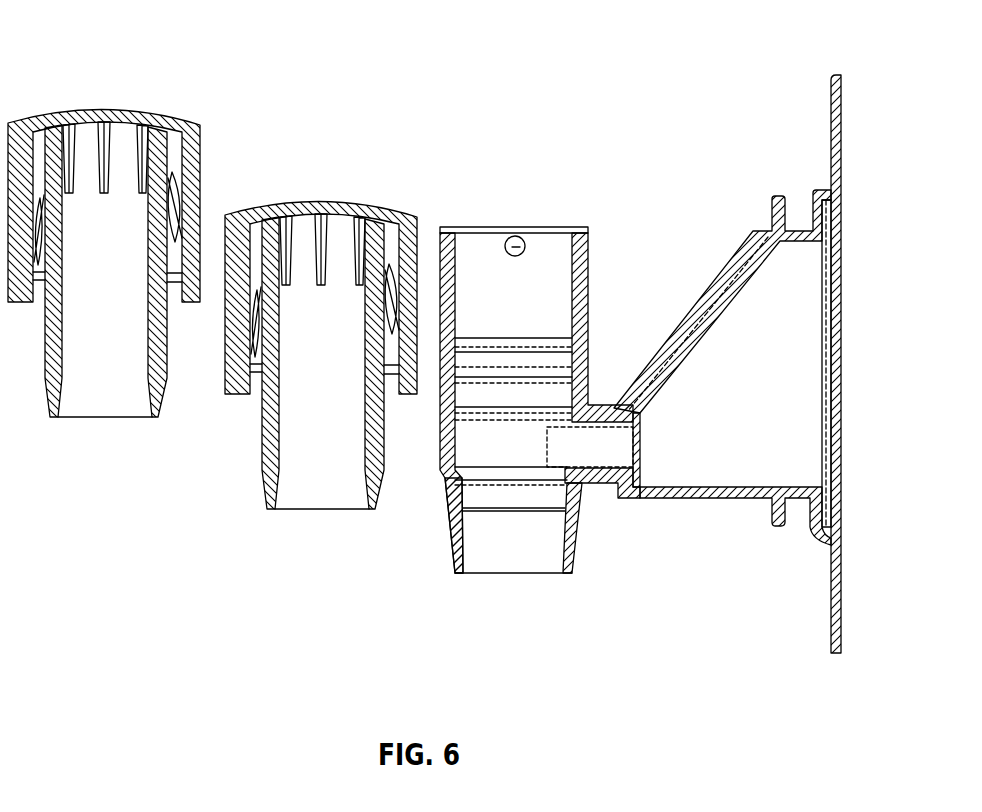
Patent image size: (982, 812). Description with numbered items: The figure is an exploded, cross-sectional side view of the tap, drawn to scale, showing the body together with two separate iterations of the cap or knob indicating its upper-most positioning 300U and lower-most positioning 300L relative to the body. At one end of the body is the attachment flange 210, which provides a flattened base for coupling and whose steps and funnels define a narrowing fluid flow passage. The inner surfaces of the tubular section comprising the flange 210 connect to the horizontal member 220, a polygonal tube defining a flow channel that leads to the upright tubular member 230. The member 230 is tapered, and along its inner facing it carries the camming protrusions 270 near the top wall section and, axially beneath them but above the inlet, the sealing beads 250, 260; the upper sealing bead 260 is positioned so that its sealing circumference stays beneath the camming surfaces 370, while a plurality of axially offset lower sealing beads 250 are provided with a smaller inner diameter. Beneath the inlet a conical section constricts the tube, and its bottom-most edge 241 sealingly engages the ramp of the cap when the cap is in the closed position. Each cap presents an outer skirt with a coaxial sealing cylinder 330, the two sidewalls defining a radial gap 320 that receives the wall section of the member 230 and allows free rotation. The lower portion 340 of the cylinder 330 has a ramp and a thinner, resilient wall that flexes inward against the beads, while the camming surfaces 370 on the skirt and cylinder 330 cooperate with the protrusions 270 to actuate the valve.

The attachment flange 210 is at (841, 613).
The horizontal member 220 is at (688, 500).
The upright tubular member 230 is at (525, 373).
The bottom-most edge of conical section 241 is at (441, 478).
The lower sealing bead 250 is at (567, 380).
The upper sealing bead 260 is at (567, 347).
The camming protrusions 270 is at (522, 246).
The upper-most positioning of cap 300U is at (104, 249).
The lower-most positioning of cap 300L is at (321, 377).
The radial gap 320 is at (33, 140).
The sealing cylinder 330 is at (152, 278).
The lower portion of cylinder 340 is at (268, 497).
The camming surfaces 370 is at (175, 213).